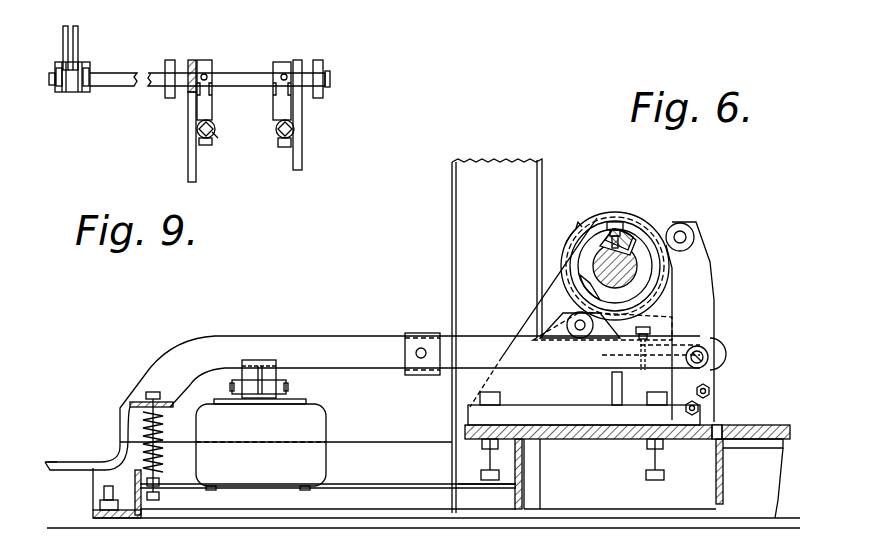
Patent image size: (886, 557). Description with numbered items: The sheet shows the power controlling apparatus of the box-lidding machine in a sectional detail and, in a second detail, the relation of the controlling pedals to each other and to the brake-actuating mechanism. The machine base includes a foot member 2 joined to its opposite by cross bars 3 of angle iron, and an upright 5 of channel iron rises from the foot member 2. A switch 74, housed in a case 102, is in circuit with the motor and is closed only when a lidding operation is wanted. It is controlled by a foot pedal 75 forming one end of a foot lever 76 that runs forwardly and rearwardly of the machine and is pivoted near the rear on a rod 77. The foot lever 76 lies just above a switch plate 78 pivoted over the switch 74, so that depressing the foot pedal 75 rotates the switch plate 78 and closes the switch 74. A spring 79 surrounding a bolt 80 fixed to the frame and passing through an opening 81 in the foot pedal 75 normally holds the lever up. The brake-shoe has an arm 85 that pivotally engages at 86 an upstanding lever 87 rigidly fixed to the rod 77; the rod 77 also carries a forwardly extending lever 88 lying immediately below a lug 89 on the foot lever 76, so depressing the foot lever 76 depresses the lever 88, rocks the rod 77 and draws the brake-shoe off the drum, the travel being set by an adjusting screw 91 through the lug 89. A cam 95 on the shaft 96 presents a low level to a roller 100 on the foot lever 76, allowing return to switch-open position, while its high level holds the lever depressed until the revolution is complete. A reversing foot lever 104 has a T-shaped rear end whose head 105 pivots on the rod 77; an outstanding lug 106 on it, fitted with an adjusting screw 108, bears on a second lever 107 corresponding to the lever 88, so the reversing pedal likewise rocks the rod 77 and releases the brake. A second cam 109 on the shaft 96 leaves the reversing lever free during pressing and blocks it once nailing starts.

In FIG. 6, the foot member 2 is at (400, 445).
In FIG. 6, the cross bar 3 is at (135, 480).
In FIG. 6, the upright 5 is at (530, 178).
In FIG. 6, the switch 74 is at (256, 384).
In FIG. 6, the foot pedal 75 is at (60, 460).
In FIG. 9, the foot lever 76 is at (302, 152).
In FIG. 6, the foot lever 76 is at (309, 343).
In FIG. 9, the rod 77 is at (120, 74).
In FIG. 6, the rod 77 is at (710, 357).
In FIG. 6, the switch plate 78 is at (266, 378).
In FIG. 6, the spring 79 is at (160, 420).
In FIG. 6, the bolt 80 is at (160, 468).
In FIG. 6, the opening 81 is at (132, 414).
In FIG. 9, the arm 85 is at (78, 38).
In FIG. 9, the pivotal engagement 86 is at (50, 80).
In FIG. 9, the upstanding lever 87 is at (85, 92).
In FIG. 9, the lever 88 is at (282, 112).
In FIG. 6, the lever 88 is at (645, 345).
In FIG. 9, the lug 89 is at (284, 148).
In FIG. 6, the lug 89 is at (652, 340).
In FIG. 9, the adjusting screw 91 is at (277, 133).
In FIG. 6, the adjusting screw 91 is at (650, 333).
In FIG. 6, the cam 95 is at (604, 212).
In FIG. 6, the shaft 96 is at (602, 272).
In FIG. 6, the roller 100 is at (552, 320).
In FIG. 6, the case 102 is at (326, 428).
In FIG. 9, the reversing foot lever 104 is at (188, 166).
In FIG. 6, the reversing foot lever 104 is at (497, 337).
In FIG. 6, the head 105 is at (708, 302).
In FIG. 9, the lug 106 is at (216, 135).
In FIG. 9, the second lever 107 is at (208, 106).
In FIG. 9, the adjusting screw 108 is at (199, 130).
In FIG. 6, the second cam 109 is at (700, 262).